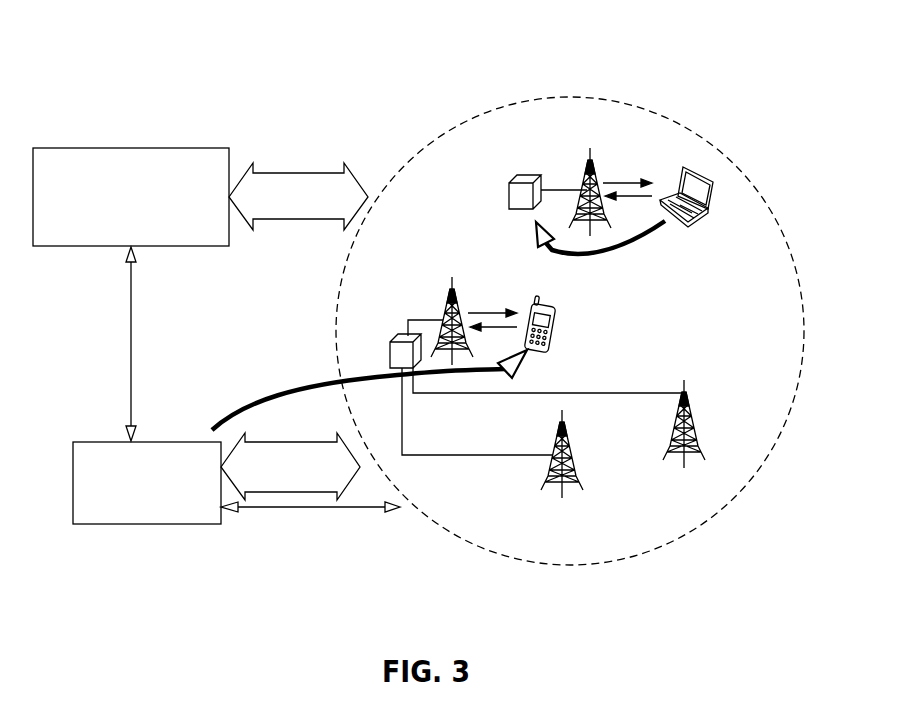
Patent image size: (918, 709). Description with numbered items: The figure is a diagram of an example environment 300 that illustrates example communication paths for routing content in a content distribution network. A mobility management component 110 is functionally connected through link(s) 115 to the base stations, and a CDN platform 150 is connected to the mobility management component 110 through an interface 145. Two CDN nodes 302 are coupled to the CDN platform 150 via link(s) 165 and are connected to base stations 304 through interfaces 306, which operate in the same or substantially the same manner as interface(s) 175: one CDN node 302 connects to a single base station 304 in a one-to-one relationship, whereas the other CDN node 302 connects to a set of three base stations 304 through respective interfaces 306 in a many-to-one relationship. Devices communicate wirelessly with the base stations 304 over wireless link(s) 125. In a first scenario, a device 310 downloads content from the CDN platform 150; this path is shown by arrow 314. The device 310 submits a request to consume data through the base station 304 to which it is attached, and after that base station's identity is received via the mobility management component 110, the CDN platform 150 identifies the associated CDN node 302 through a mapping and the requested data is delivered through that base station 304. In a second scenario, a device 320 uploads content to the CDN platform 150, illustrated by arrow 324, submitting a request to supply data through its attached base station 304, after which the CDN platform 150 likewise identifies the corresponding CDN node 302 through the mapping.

The mobility management component 110 is at (97, 148).
The link(s) 115 is at (319, 165).
The wireless link(s) 125 is at (620, 166).
The interface 145 is at (130, 312).
The CDN platform 150 is at (115, 442).
The link(s) 165 is at (319, 431).
The interface(s) 175 is at (362, 510).
The example environment 300 is at (708, 60).
The CDN node 302 is at (508, 196).
The base station 304 is at (588, 160).
The interface 306 is at (562, 189).
The device 310 is at (550, 312).
The arrow 314 is at (265, 393).
The device 320 is at (700, 218).
The arrow 324 is at (618, 246).